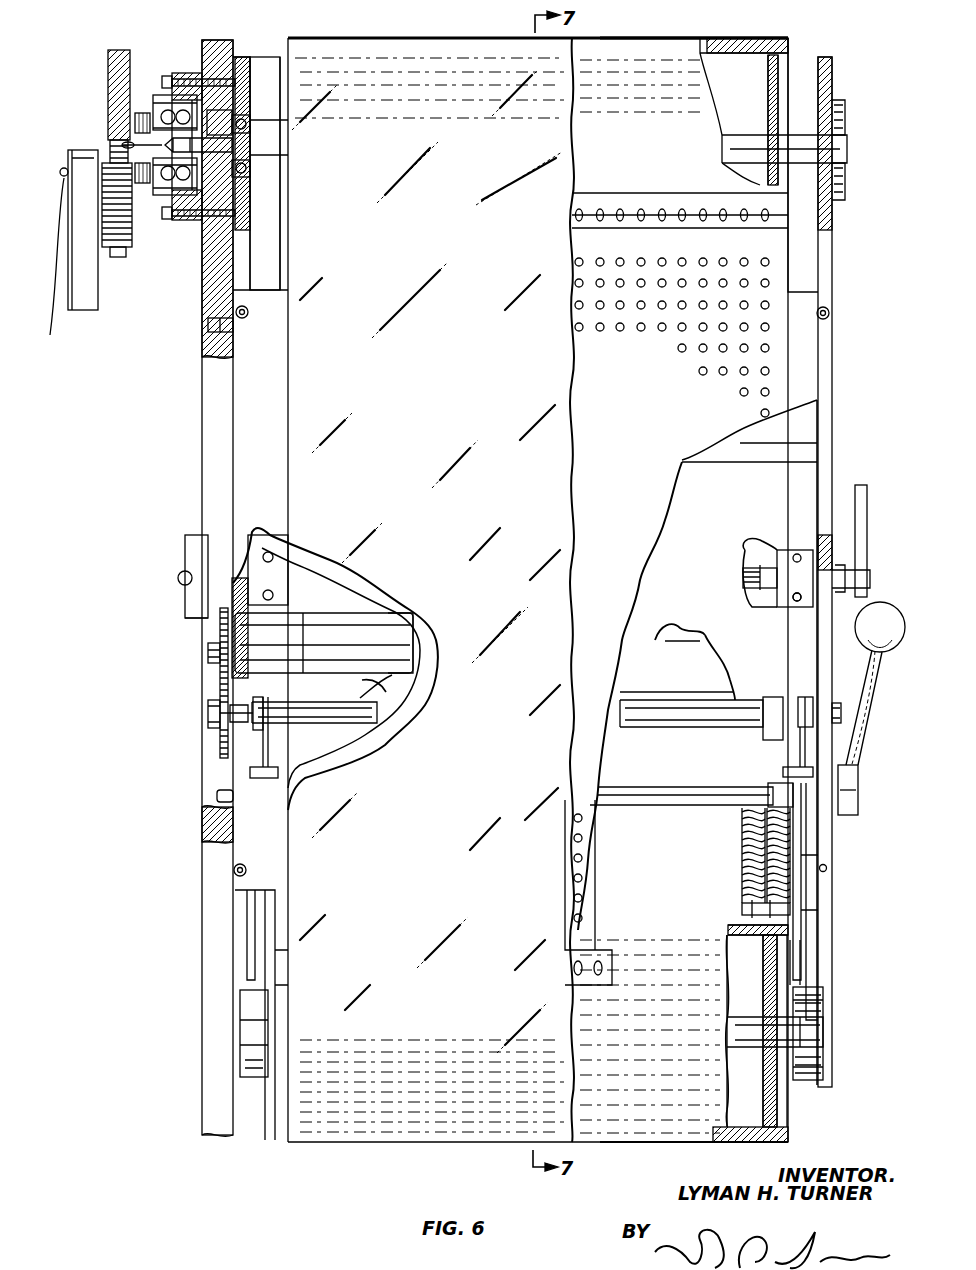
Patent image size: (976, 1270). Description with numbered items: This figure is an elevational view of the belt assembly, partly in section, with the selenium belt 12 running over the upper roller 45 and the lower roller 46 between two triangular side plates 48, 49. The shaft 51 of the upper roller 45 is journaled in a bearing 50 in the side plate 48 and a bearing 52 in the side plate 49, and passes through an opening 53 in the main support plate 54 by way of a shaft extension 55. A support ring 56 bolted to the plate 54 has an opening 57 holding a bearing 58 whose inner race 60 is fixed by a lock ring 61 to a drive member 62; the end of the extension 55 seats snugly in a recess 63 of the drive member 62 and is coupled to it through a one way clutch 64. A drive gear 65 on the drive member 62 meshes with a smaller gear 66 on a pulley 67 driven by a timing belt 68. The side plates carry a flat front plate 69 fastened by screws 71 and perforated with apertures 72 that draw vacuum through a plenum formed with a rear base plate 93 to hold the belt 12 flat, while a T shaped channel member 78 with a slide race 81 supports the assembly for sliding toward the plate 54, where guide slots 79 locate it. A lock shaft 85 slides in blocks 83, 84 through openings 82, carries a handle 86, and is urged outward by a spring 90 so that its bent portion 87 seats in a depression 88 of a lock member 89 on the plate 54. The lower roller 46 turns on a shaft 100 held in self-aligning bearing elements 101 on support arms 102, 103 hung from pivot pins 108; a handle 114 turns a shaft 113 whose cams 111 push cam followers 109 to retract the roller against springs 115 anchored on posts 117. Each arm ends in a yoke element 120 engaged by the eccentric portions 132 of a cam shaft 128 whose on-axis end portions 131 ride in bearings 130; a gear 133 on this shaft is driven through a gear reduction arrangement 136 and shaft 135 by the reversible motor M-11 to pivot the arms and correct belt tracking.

The selenium belt 12 is at (288, 430).
The upper roller 45 is at (640, 40).
The lower roller 46 is at (640, 1143).
The side plate 48 is at (828, 262).
The side plate 49 is at (250, 280).
The bearing 50 is at (845, 128).
The shaft 51 is at (847, 152).
The bearing 52 is at (250, 120).
The opening 53 is at (222, 110).
The main support plate 54 is at (202, 440).
The shaft extension 55 is at (240, 172).
The support ring 56 is at (195, 73).
The opening 57 is at (165, 80).
The bearing 58 is at (174, 219).
The inner race 60 is at (135, 120).
The lock ring 61 is at (145, 183).
The drive member 62 is at (122, 143).
The recess 63 is at (240, 150).
The one way clutch 64 is at (235, 70).
The drive gear 65 is at (108, 62).
The gear 66 is at (128, 250).
The pulley 67 is at (50, 316).
The timing belt 68 is at (98, 290).
The front plate 69 is at (832, 349).
The screws 71 is at (829, 313).
The apertures 72 is at (666, 222).
The T shaped channel member 78 is at (700, 635).
The guide slots 79 is at (208, 322).
The race 81 is at (710, 650).
The opening 82 is at (818, 535).
The block 83 is at (790, 600).
The block 84 is at (262, 553).
The shaft 85 is at (743, 576).
The handle 86 is at (867, 493).
The bent portion 87 is at (178, 578).
The depression 88 is at (185, 600).
The lock member 89 is at (185, 546).
The spring 90 is at (845, 570).
The rear base plate 93 is at (368, 690).
The shaft 100 is at (745, 1047).
The self-aligning bearing element 101 is at (823, 1050).
The support arm 102 is at (805, 958).
The support arm 103 is at (262, 993).
The pivot pin 108 is at (825, 848).
The cam follower 109 is at (785, 767).
The cam 111 is at (770, 785).
The shaft 113 is at (668, 805).
The handle 114 is at (893, 645).
The springs 115 is at (742, 840).
The post 117 is at (742, 909).
The yoke element 120 is at (806, 697).
The cam shaft 128 is at (672, 725).
The bearings 130 is at (230, 715).
The on-axis end portion 131 is at (841, 718).
The eccentric portion 132 is at (780, 697).
The gear 133 is at (190, 687).
The shaft 135 is at (208, 652).
The gear reduction arrangement 136 is at (290, 613).
The reversible motor M-11 is at (405, 628).